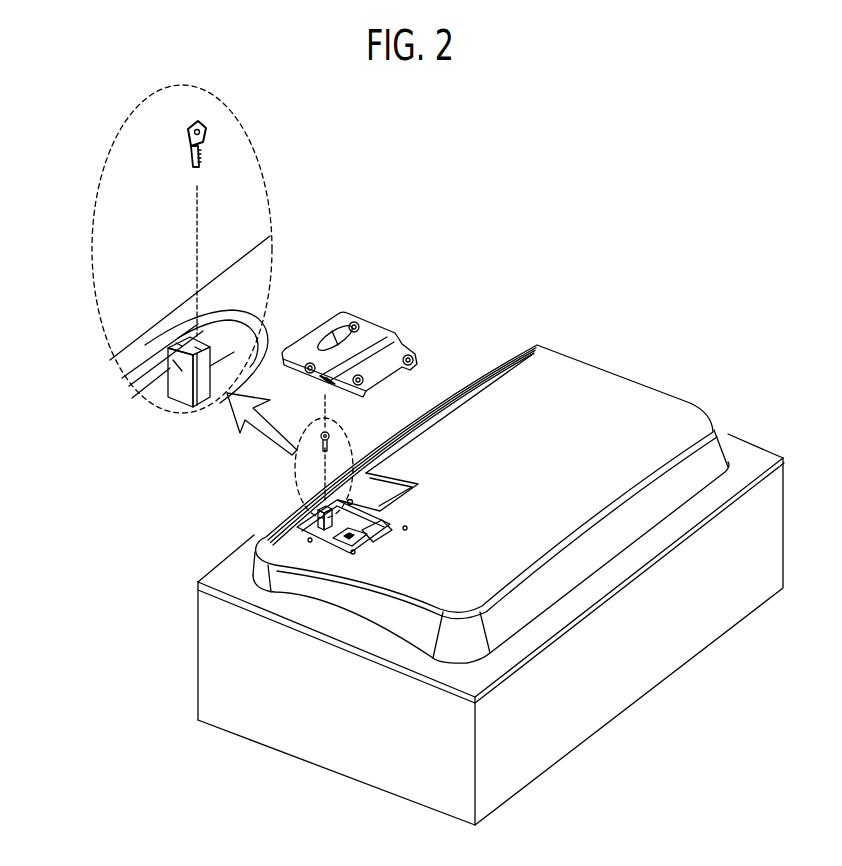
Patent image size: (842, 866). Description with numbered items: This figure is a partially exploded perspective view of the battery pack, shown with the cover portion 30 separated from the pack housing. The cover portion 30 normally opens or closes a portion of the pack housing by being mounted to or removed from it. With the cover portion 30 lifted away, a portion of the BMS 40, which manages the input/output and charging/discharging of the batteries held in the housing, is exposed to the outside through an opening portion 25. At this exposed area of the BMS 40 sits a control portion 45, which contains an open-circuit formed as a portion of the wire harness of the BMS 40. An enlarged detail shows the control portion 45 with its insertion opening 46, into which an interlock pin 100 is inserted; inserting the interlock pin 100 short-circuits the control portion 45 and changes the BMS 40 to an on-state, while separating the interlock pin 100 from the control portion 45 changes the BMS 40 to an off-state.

The interlock pin 100 is at (210, 135).
The insertion opening 46 is at (262, 306).
The control portion 45 is at (109, 348).
The cover portion 30 is at (404, 333).
The opening portion 25 is at (351, 498).
The BMS 40 is at (303, 565).